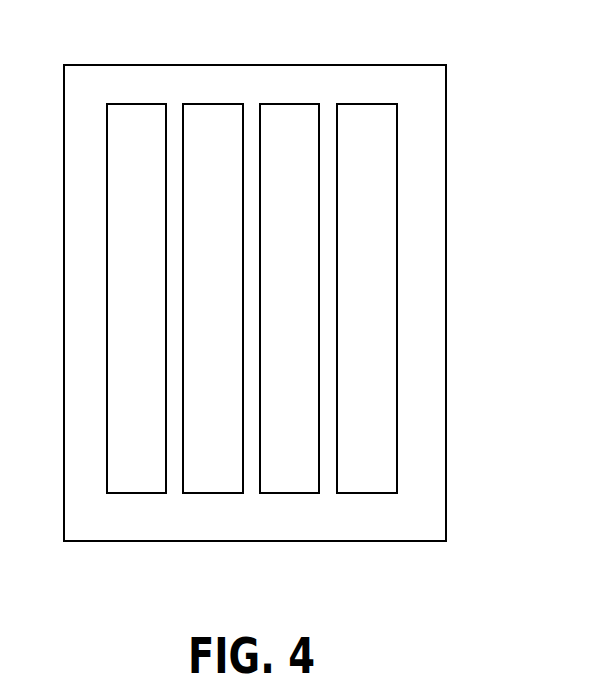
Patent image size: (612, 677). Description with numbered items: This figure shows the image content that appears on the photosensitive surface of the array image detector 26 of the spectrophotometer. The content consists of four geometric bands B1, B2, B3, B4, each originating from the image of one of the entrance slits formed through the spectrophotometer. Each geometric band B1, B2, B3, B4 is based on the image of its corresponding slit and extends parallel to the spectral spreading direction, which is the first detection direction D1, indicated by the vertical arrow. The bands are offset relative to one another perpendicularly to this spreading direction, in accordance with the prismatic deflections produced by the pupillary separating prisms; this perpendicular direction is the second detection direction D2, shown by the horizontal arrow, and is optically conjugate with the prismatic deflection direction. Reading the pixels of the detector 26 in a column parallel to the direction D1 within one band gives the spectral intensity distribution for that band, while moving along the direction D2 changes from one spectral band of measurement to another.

The array image detector 26 is at (446, 142).
The first geometric band B1 is at (133, 493).
The second geometric band B2 is at (207, 493).
The third geometric band B3 is at (293, 493).
The fourth geometric band B4 is at (368, 493).
The first detection direction D1 is at (472, 233).
The second detection direction D2 is at (302, 40).